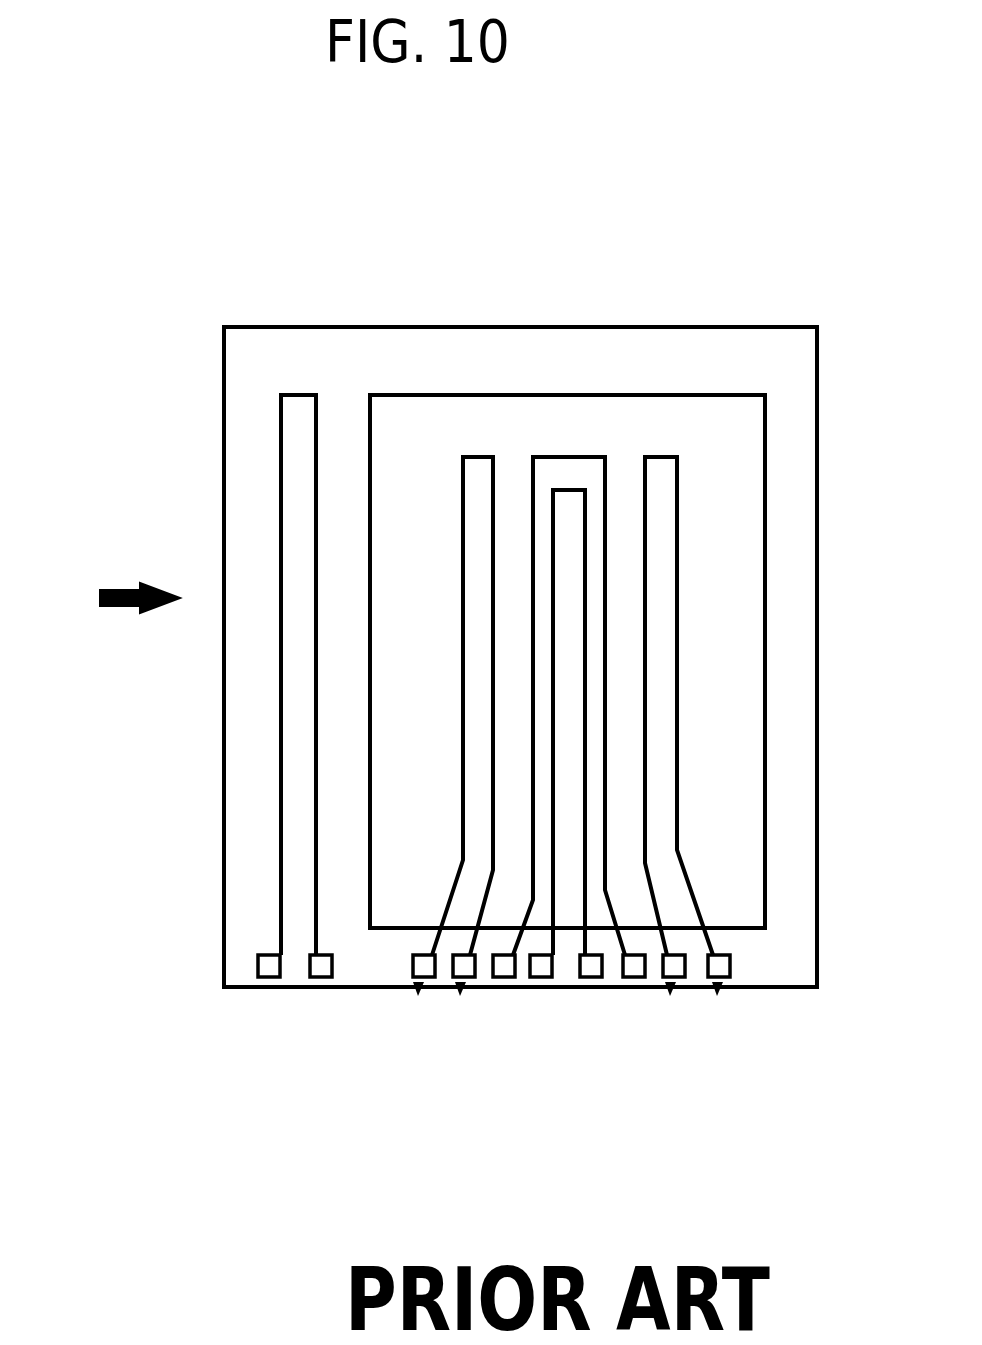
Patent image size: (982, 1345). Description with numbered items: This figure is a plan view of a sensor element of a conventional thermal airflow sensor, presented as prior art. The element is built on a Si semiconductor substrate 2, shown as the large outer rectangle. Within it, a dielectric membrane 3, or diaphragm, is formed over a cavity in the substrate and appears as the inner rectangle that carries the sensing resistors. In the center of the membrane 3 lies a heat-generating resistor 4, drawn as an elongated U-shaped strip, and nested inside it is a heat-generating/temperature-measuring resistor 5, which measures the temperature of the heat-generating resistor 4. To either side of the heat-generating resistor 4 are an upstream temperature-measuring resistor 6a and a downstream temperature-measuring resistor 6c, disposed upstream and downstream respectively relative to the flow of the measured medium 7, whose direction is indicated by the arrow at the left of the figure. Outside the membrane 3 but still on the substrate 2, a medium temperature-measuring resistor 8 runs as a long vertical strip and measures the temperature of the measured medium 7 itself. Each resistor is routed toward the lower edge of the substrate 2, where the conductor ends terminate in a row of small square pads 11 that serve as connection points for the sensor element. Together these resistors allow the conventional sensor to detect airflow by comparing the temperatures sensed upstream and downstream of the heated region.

The Si semiconductor substrate 2 is at (784, 327).
The dielectric membrane 3 is at (727, 405).
The heat-generating resistor 4 is at (590, 457).
The heat-generating/temperature-measuring resistor 5 is at (553, 490).
The upstream temperature-measuring resistor 6a is at (472, 457).
The downstream temperature-measuring resistor 6c is at (660, 457).
The measured medium 7 is at (118, 590).
The medium temperature-measuring resistor 8 is at (285, 395).
The connection pads 11 is at (725, 960).